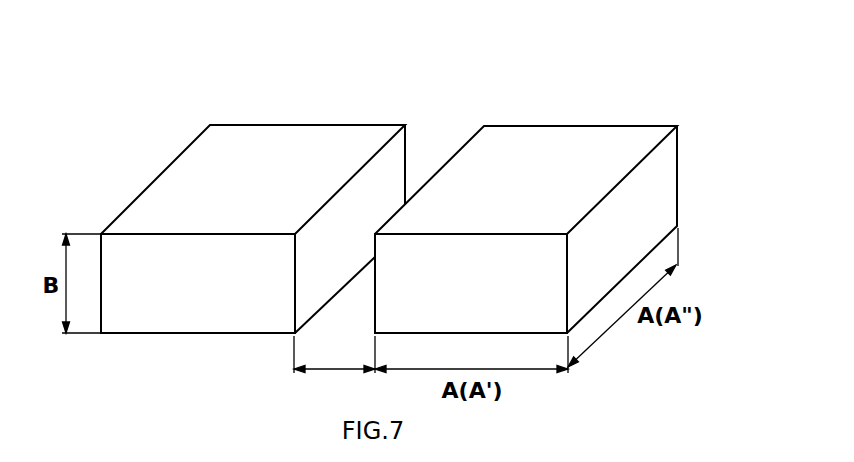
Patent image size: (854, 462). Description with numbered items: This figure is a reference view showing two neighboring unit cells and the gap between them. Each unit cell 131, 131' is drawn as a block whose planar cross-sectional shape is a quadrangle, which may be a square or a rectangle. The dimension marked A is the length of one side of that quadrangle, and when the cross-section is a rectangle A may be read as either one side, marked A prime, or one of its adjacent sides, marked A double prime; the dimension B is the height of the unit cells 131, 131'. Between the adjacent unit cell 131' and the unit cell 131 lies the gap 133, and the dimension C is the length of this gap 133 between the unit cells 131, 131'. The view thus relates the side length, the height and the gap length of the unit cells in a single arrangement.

The unit cell 131 is at (526, 197).
The adjacent unit cell 131' is at (253, 215).
The gap 133 is at (433, 138).